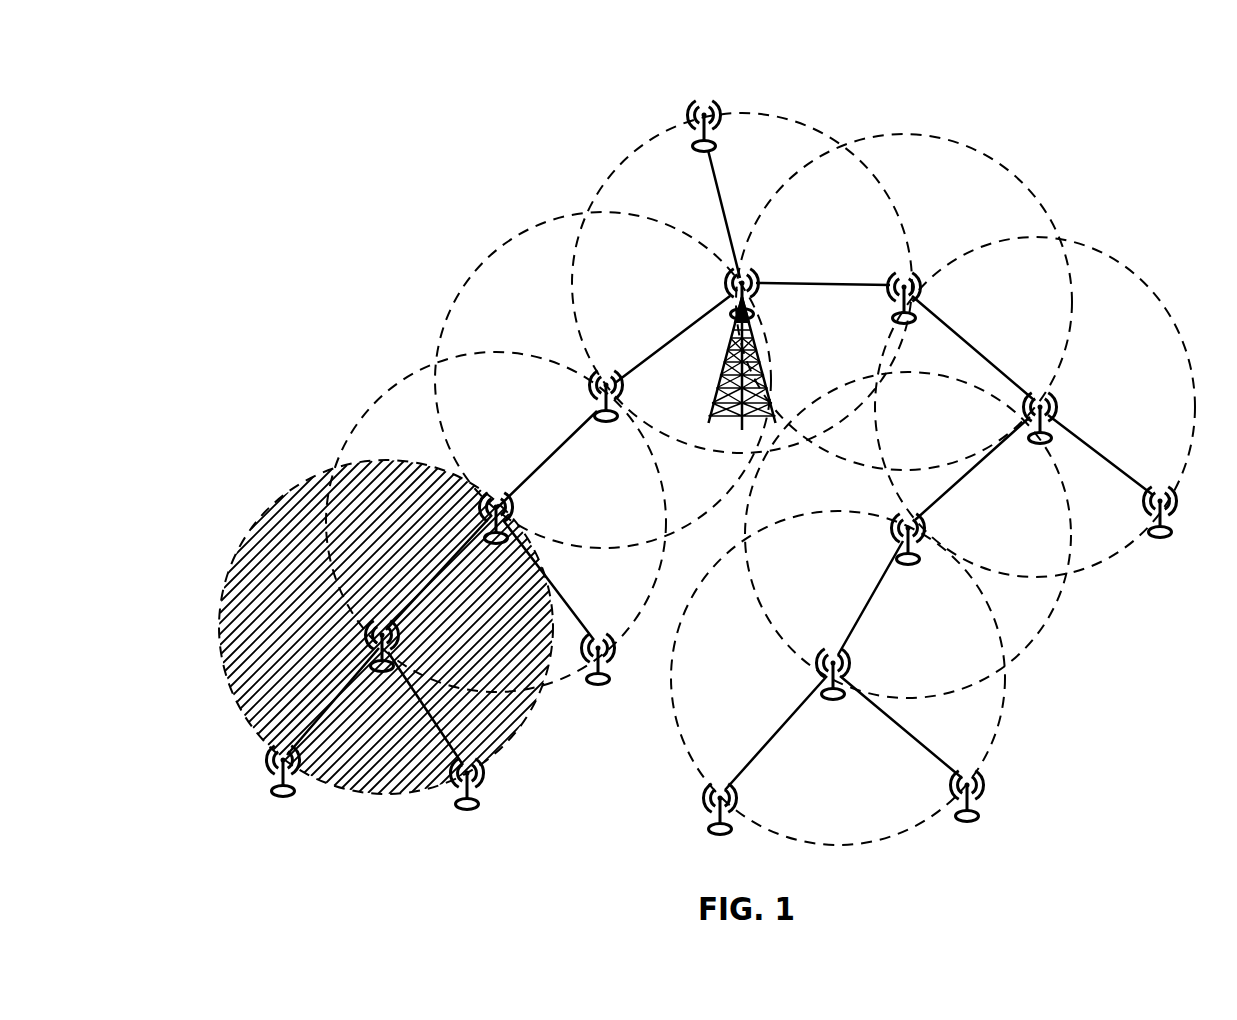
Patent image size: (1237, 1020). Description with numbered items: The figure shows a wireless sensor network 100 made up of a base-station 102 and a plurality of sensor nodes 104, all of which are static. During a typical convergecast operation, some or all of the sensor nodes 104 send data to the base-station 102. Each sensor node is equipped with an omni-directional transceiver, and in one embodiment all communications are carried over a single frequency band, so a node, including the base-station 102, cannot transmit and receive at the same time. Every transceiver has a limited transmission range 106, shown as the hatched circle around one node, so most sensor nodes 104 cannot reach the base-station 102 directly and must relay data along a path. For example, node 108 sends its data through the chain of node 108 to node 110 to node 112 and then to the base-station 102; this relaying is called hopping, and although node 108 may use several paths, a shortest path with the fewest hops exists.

The wireless sensor network 100 is at (891, 55).
The base-station 102 is at (725, 377).
The sensor nodes 104 is at (1058, 396).
The transmission range 106 is at (307, 517).
The node 108 is at (583, 684).
The node 110 is at (515, 522).
The node 112 is at (593, 415).